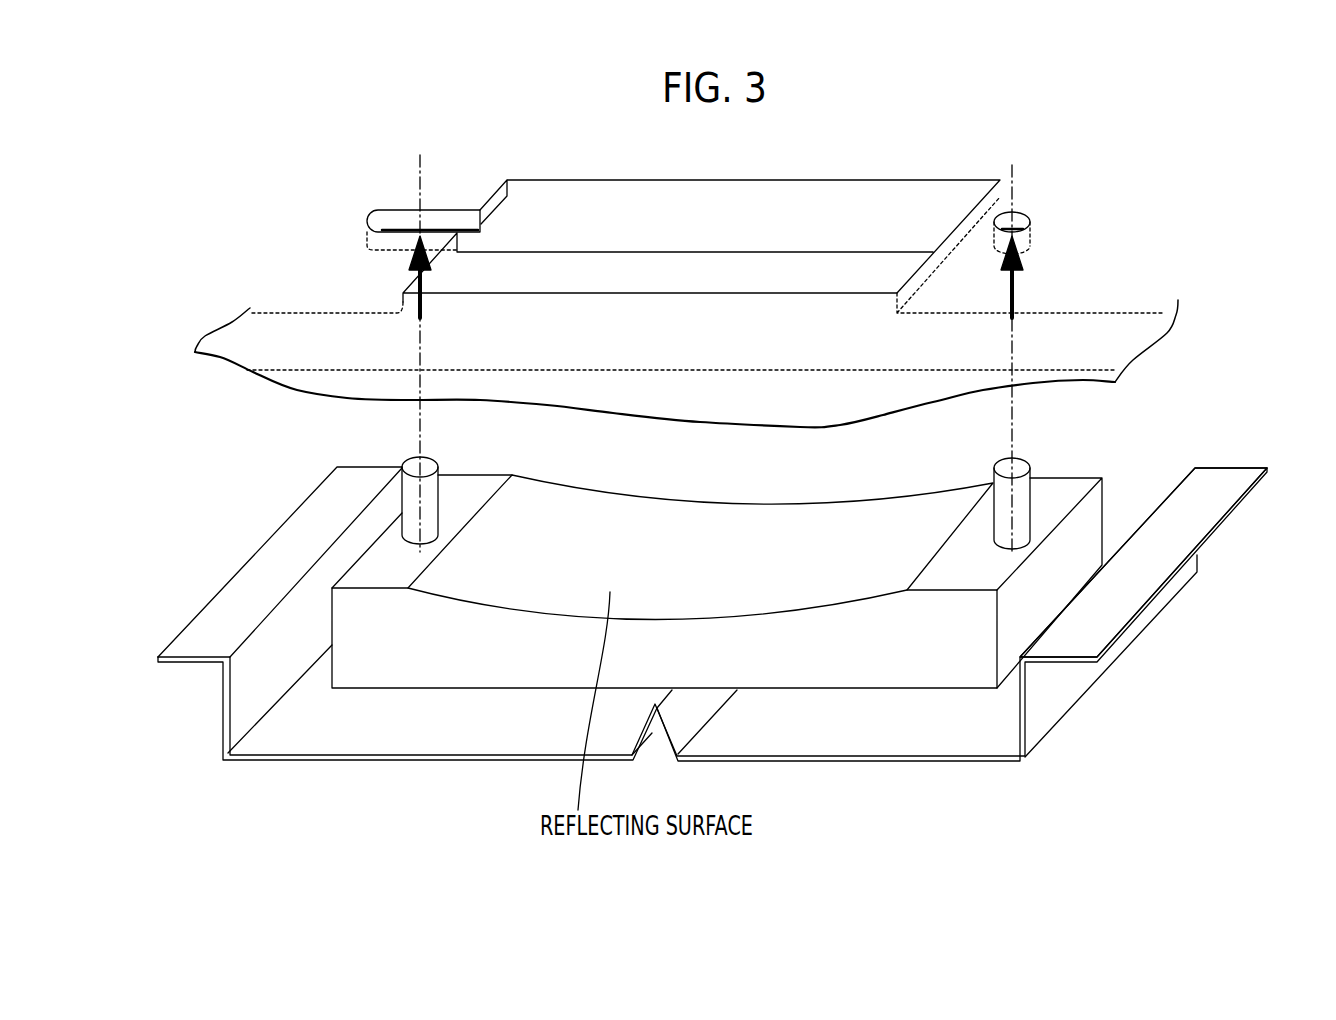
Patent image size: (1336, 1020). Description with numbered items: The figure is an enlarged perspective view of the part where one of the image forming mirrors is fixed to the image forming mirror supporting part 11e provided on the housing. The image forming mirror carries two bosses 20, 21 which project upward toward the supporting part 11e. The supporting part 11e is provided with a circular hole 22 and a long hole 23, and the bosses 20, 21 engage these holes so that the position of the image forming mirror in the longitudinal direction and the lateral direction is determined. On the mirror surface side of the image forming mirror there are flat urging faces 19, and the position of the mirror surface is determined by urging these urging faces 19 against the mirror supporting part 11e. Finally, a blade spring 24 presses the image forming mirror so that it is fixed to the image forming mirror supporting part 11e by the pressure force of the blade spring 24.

The image forming mirror supporting part 11e is at (398, 270).
The long hole 23 is at (400, 220).
The circular hole 22 is at (1024, 212).
The boss 21 is at (410, 503).
The boss 20 is at (1030, 466).
The blade spring 24 is at (837, 730).
The flat urging faces 19 is at (965, 572).